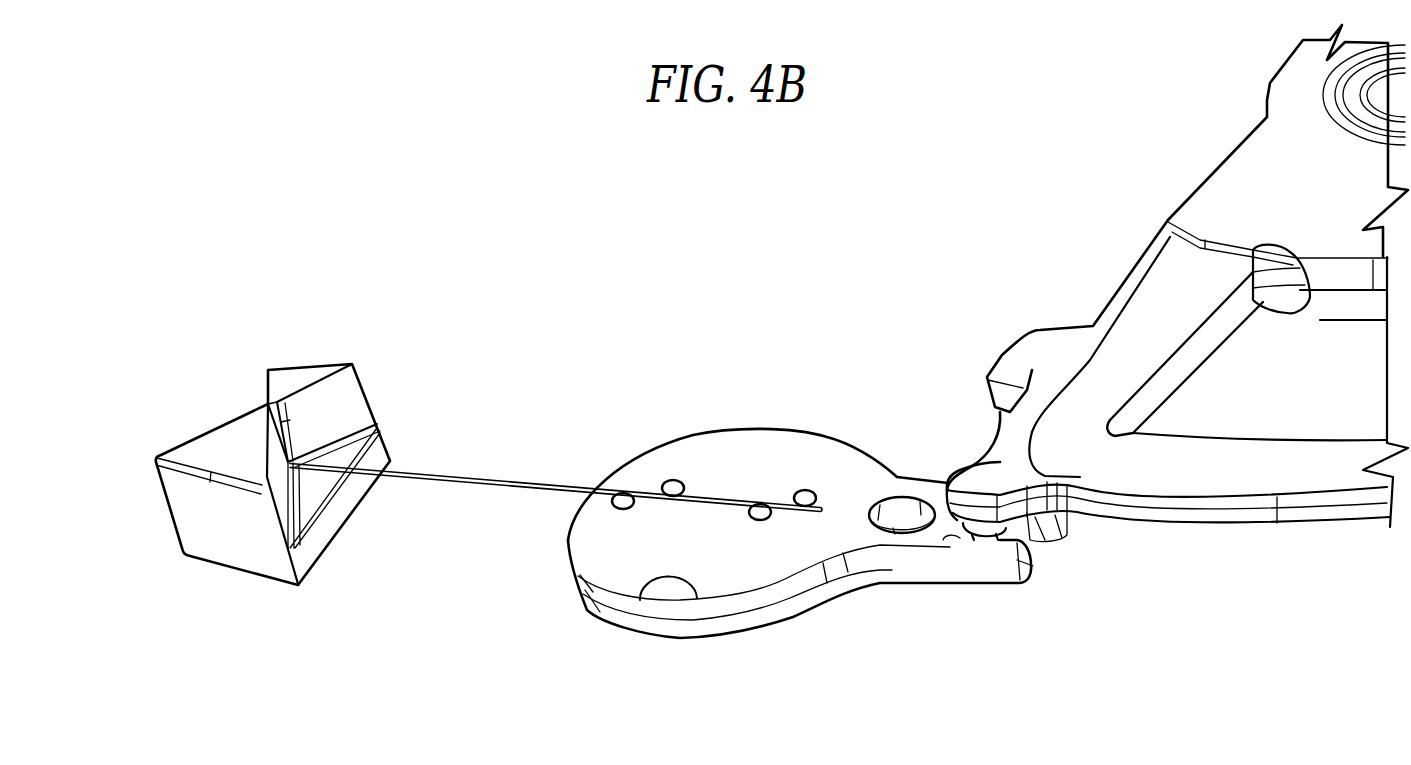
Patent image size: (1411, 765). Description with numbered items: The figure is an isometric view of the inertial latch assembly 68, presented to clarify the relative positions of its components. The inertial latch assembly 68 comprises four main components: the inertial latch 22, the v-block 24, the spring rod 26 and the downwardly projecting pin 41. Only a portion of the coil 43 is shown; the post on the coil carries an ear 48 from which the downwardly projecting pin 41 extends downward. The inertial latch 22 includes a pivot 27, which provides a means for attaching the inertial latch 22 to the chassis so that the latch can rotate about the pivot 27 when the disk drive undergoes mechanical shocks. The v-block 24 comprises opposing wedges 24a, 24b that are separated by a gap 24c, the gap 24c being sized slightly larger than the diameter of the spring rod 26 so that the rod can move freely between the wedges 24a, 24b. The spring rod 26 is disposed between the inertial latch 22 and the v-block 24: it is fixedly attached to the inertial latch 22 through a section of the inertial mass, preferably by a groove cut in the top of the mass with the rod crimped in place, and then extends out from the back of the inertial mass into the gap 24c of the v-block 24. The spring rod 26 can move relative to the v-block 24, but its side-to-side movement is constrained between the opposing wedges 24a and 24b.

The inertial latch 22 is at (642, 587).
The v-block 24 is at (317, 363).
The wedge 24a is at (337, 397).
The wedge 24b is at (272, 482).
The gap 24c is at (267, 405).
The spring rod 26 is at (493, 473).
The pivot 27 is at (902, 523).
The downwardly projecting pin 41 is at (962, 527).
The coil 43 is at (1130, 283).
The ear 48 is at (977, 487).
The inertial latch assembly 68 is at (444, 728).